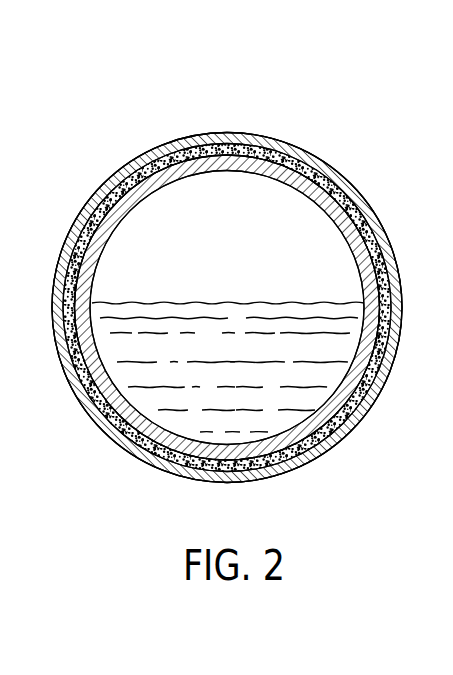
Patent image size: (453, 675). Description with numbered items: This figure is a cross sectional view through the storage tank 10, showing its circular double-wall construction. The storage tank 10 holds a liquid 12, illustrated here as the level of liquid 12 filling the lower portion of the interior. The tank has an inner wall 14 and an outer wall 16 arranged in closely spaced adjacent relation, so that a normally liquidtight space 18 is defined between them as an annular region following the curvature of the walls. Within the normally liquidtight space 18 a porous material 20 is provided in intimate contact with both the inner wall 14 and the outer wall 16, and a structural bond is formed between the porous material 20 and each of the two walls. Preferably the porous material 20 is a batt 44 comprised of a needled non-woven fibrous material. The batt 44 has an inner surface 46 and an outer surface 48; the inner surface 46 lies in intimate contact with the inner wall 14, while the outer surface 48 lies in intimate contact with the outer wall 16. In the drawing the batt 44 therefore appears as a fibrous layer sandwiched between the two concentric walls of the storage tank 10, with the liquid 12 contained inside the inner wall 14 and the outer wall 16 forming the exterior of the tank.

The storage tank 10 is at (300, 118).
The liquid 12 is at (253, 306).
The inner wall 14 is at (145, 192).
The outer wall 16 is at (170, 143).
The normally liquidtight space 18 is at (350, 183).
The porous material 20 is at (128, 167).
The batt 44 is at (368, 216).
The inner surface 46 is at (220, 165).
The outer surface 48 is at (303, 158).